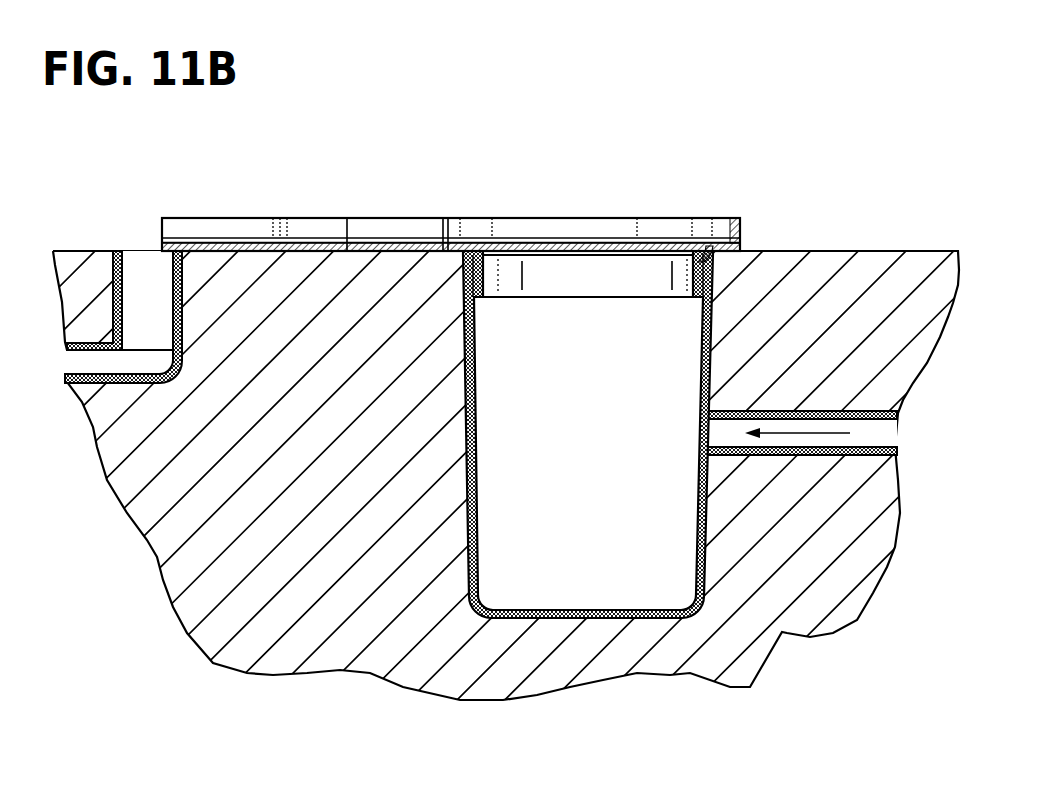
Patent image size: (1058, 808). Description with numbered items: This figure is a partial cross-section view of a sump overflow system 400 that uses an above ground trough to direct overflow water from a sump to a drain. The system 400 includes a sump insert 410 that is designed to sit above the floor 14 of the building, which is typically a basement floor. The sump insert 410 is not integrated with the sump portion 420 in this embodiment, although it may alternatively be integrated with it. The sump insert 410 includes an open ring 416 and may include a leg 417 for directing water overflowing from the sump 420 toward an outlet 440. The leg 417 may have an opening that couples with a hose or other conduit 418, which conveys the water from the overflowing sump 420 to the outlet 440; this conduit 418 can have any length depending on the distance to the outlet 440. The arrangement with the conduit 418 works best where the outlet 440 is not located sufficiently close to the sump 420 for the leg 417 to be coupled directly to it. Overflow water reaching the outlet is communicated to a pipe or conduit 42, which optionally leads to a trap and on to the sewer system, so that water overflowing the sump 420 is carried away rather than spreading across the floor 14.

The sump overflow system 400 is at (509, 322).
The sump insert 410 is at (502, 202).
The open ring 416 is at (462, 247).
The leg 417 is at (398, 243).
The conduit 418 is at (257, 245).
The sump portion 420 is at (712, 370).
The outlet 440 is at (119, 233).
The conduit 42 is at (123, 281).
The floor 14 is at (842, 250).